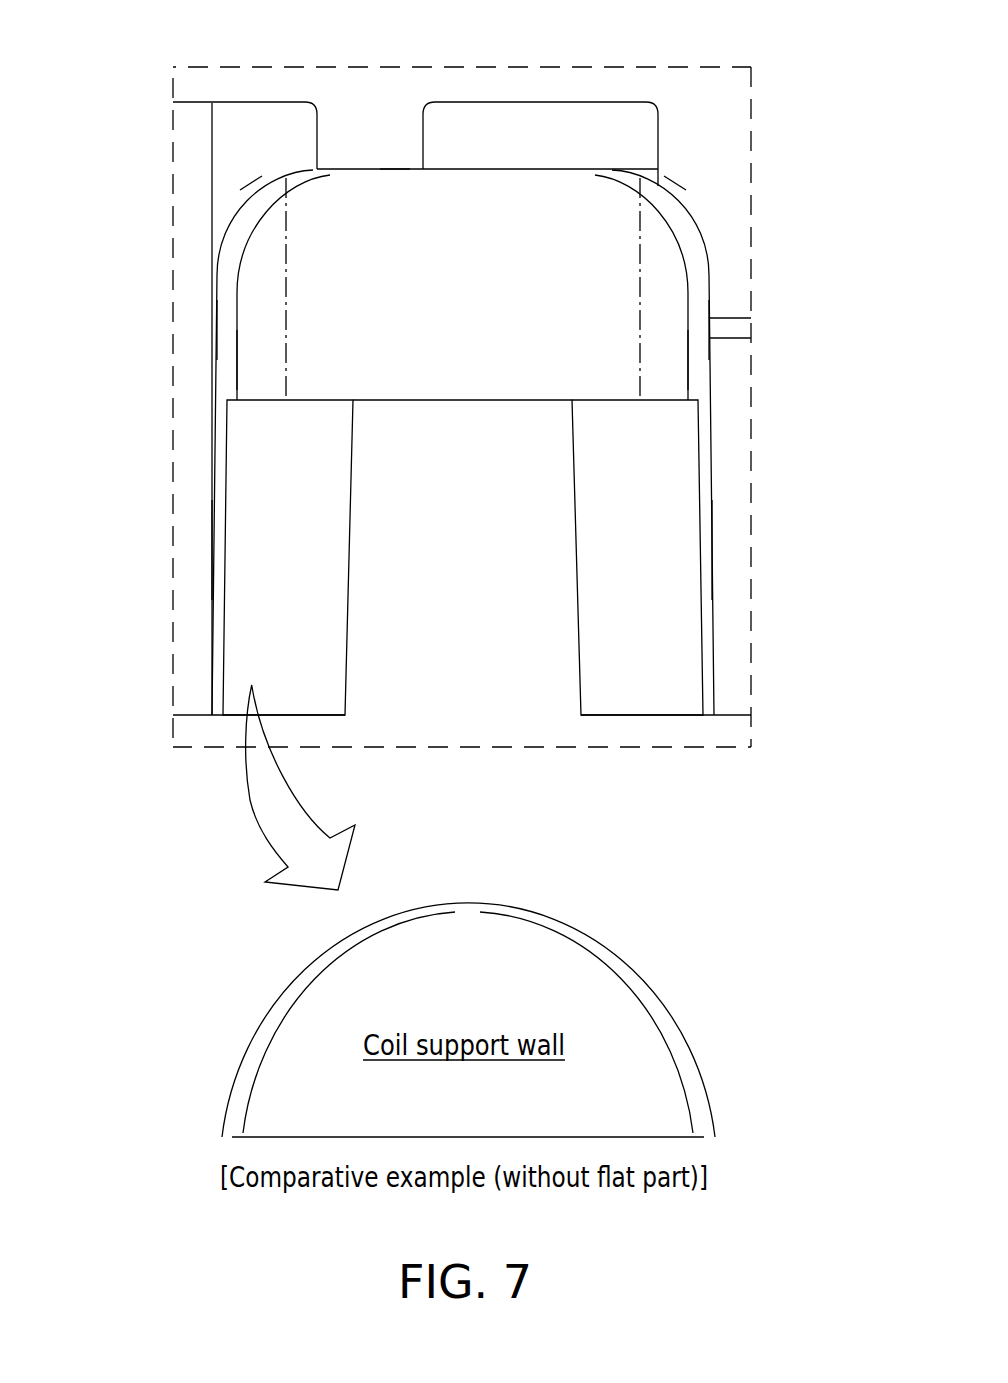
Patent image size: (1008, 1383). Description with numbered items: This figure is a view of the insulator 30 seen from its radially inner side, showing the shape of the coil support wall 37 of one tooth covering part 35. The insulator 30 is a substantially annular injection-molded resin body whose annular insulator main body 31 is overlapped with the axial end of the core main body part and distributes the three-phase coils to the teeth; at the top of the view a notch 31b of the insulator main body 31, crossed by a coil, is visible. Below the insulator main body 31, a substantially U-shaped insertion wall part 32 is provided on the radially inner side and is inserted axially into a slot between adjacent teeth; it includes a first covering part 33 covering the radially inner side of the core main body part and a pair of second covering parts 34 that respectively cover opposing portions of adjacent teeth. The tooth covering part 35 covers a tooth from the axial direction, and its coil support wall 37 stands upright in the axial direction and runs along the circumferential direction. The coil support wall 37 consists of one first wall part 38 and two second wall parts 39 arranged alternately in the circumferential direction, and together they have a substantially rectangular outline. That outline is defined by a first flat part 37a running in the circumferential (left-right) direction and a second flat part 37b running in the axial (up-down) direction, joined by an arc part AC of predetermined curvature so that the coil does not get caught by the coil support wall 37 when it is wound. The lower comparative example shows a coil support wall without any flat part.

The insulator 30 is at (750, 500).
The insulator main body 31 is at (730, 365).
The notch 31b is at (318, 143).
The insertion wall part 32 is at (191, 716).
The first covering part 33 is at (197, 622).
The second covering part 34 is at (298, 602).
The tooth covering part 35 is at (693, 231).
The coil support wall 37 is at (514, 177).
The first flat part 37a is at (396, 168).
The second flat part 37b is at (228, 332).
The first wall part 38 is at (478, 300).
The second wall part 39 is at (277, 328).
The arc part AC is at (254, 213).